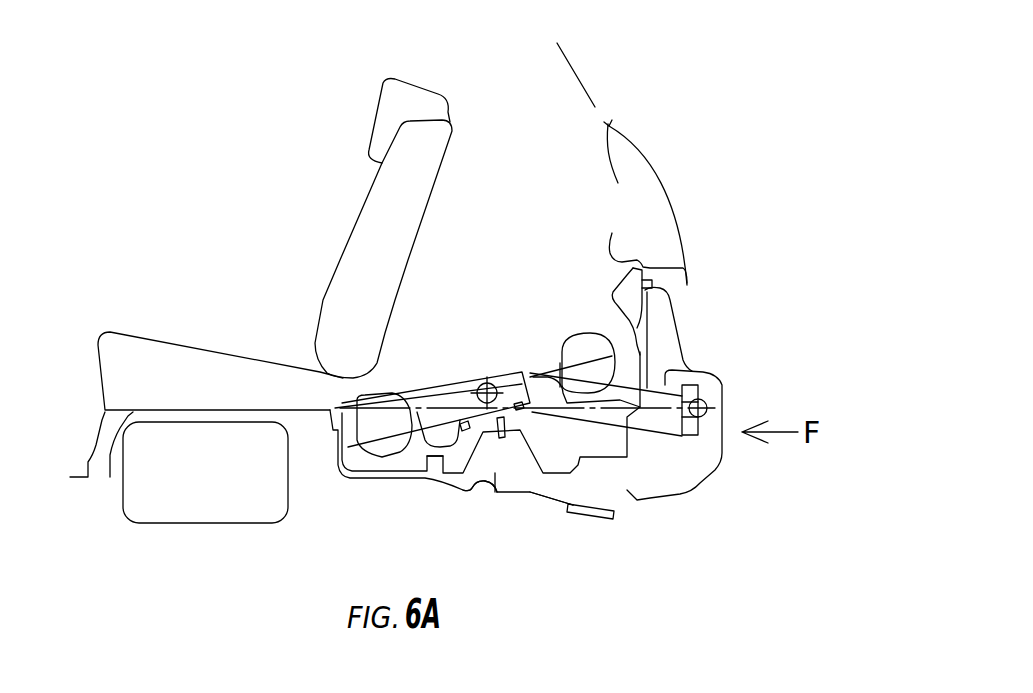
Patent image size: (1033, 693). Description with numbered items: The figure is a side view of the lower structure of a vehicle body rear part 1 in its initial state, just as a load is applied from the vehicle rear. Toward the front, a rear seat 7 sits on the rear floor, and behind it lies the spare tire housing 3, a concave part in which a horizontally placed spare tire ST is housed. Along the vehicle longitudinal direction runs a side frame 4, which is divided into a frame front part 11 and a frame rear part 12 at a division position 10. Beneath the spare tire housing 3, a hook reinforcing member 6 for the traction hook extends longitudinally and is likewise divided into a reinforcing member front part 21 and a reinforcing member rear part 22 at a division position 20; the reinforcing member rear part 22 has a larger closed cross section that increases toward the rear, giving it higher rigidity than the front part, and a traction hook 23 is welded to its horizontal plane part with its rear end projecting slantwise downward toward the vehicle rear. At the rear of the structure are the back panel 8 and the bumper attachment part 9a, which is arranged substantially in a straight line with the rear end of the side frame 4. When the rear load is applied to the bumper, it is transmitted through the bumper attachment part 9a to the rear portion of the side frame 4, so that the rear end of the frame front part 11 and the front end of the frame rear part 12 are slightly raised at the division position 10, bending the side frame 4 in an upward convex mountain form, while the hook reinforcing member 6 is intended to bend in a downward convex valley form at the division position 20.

The vehicle body rear part 1 is at (587, 70).
The spare tire housing 3 is at (568, 457).
The side frame 4 is at (412, 390).
The hook reinforcing member 6 is at (353, 477).
The rear seat 7 is at (437, 137).
The back panel 8 is at (620, 263).
The bumper attachment part 9a is at (727, 433).
The division position 10 is at (530, 385).
The frame front part 11 is at (465, 380).
The frame rear part 12 is at (665, 383).
The division position 20 is at (480, 484).
The reinforcing member front part 21 is at (420, 489).
The reinforcing member rear part 22 is at (540, 500).
The traction hook 23 is at (588, 520).
The spare tire ST is at (590, 338).